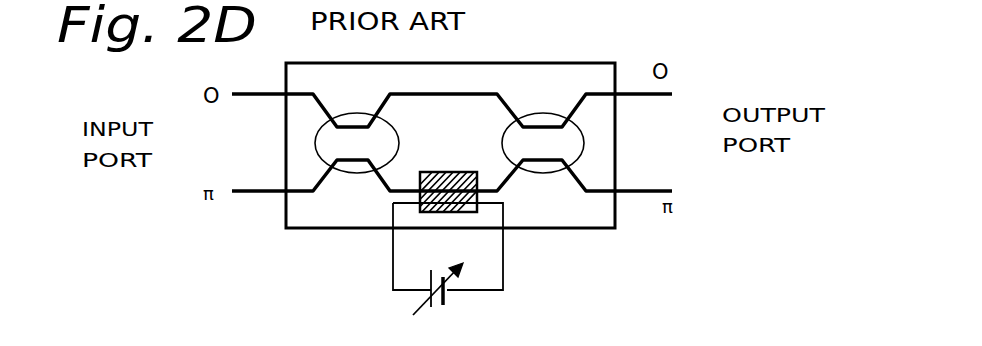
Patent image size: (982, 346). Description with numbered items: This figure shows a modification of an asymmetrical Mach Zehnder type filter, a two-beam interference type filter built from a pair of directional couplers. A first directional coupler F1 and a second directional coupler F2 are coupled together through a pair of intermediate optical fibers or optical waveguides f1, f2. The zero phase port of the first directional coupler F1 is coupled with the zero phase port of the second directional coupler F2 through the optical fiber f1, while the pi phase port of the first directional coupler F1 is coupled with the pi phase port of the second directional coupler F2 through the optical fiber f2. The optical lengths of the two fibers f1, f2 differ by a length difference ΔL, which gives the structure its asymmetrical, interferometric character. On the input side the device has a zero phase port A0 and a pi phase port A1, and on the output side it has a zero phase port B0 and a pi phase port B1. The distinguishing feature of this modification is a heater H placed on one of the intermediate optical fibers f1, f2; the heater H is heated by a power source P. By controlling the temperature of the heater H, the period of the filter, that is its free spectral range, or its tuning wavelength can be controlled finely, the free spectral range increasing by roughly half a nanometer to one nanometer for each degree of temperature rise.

The optical fiber f1 is at (452, 110).
The optical fiber f2 is at (514, 173).
The first directional coupler F1 is at (316, 140).
The second directional coupler F2 is at (580, 141).
The heater H is at (420, 197).
The power source P is at (437, 302).
The zero phase port A0 is at (167, 96).
The pi phase port A1 is at (171, 196).
The zero phase port B0 is at (694, 96).
The pi phase port B1 is at (694, 191).